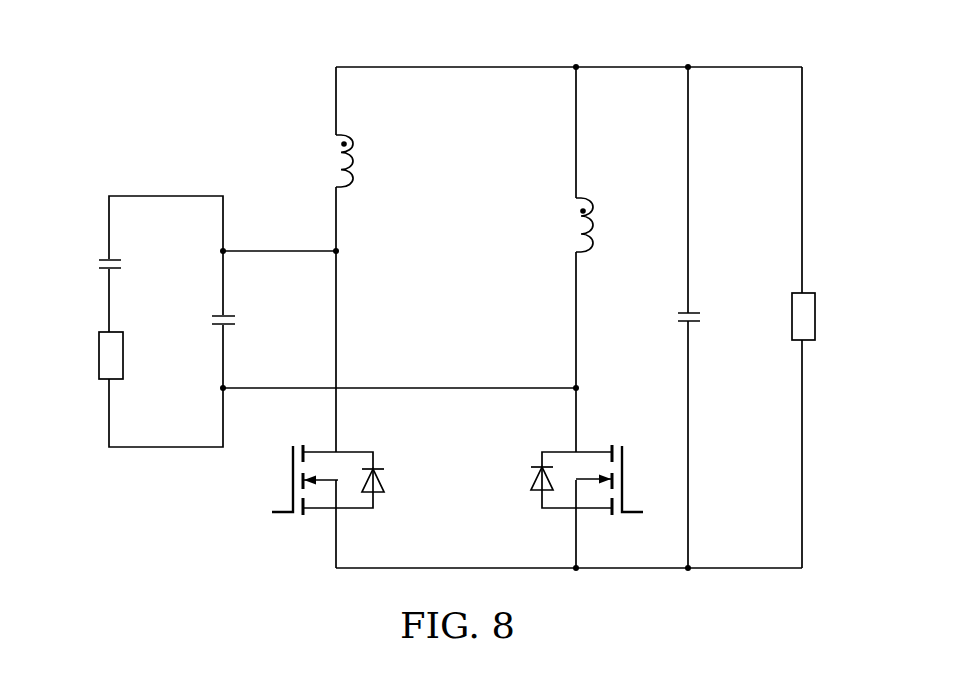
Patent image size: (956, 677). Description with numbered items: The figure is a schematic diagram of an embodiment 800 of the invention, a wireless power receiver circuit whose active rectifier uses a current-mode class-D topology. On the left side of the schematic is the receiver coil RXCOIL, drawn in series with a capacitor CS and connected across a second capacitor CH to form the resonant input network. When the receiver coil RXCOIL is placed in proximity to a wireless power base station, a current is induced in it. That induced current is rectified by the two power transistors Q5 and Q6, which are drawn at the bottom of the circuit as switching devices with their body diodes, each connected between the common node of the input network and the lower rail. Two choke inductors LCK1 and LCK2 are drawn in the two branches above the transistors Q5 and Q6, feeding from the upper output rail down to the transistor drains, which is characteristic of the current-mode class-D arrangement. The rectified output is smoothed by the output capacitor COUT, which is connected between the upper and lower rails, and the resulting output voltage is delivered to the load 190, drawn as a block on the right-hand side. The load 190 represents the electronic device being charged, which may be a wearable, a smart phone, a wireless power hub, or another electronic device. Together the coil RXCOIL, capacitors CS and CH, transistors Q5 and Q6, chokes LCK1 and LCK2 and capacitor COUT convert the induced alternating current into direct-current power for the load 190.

The embodiment 800 is at (435, 289).
The load 190 is at (816, 316).
The power transistor Q5 is at (320, 480).
The power transistor Q6 is at (593, 480).
The first choke inductor LCK1 is at (372, 161).
The second choke inductor LCK2 is at (613, 225).
The series resonant capacitor CS is at (92, 268).
The parallel capacitor CH is at (205, 324).
The output capacitor COUT is at (722, 321).
The receiver coil RXCOIL is at (90, 372).